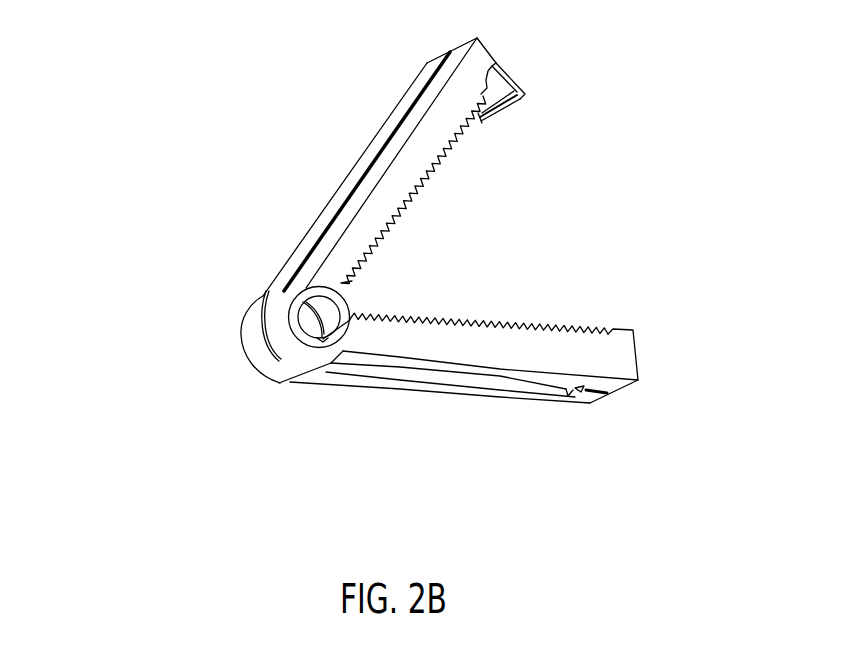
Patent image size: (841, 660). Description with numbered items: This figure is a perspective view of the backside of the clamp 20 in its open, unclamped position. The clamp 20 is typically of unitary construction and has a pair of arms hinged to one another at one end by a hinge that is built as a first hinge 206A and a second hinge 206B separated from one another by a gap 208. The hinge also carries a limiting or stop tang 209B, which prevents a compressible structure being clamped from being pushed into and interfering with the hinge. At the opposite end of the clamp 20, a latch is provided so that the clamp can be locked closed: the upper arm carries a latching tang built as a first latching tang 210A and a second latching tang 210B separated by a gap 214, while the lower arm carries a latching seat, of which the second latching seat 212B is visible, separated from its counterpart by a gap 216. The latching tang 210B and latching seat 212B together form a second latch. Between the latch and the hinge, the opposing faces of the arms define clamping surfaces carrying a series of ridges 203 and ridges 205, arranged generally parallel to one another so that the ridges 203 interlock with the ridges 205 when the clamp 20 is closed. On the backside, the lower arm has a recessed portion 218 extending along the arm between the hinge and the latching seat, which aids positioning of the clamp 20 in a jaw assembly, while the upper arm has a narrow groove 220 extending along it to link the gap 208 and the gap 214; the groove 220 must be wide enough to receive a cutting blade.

The clamp 20 is at (182, 124).
The groove 220 is at (378, 152).
The ridges 203 is at (403, 173).
The second latching tang 210B is at (518, 93).
The gap 214 is at (493, 108).
The first latching tang 210A is at (480, 117).
The stop tang 209B is at (327, 315).
The second hinge 206B is at (280, 330).
The gap 208 is at (267, 348).
The first hinge 206A is at (265, 365).
The ridges 205 is at (495, 327).
The second latching seat 212B is at (613, 352).
The recessed portion 218 is at (450, 379).
The gap 216 is at (608, 393).